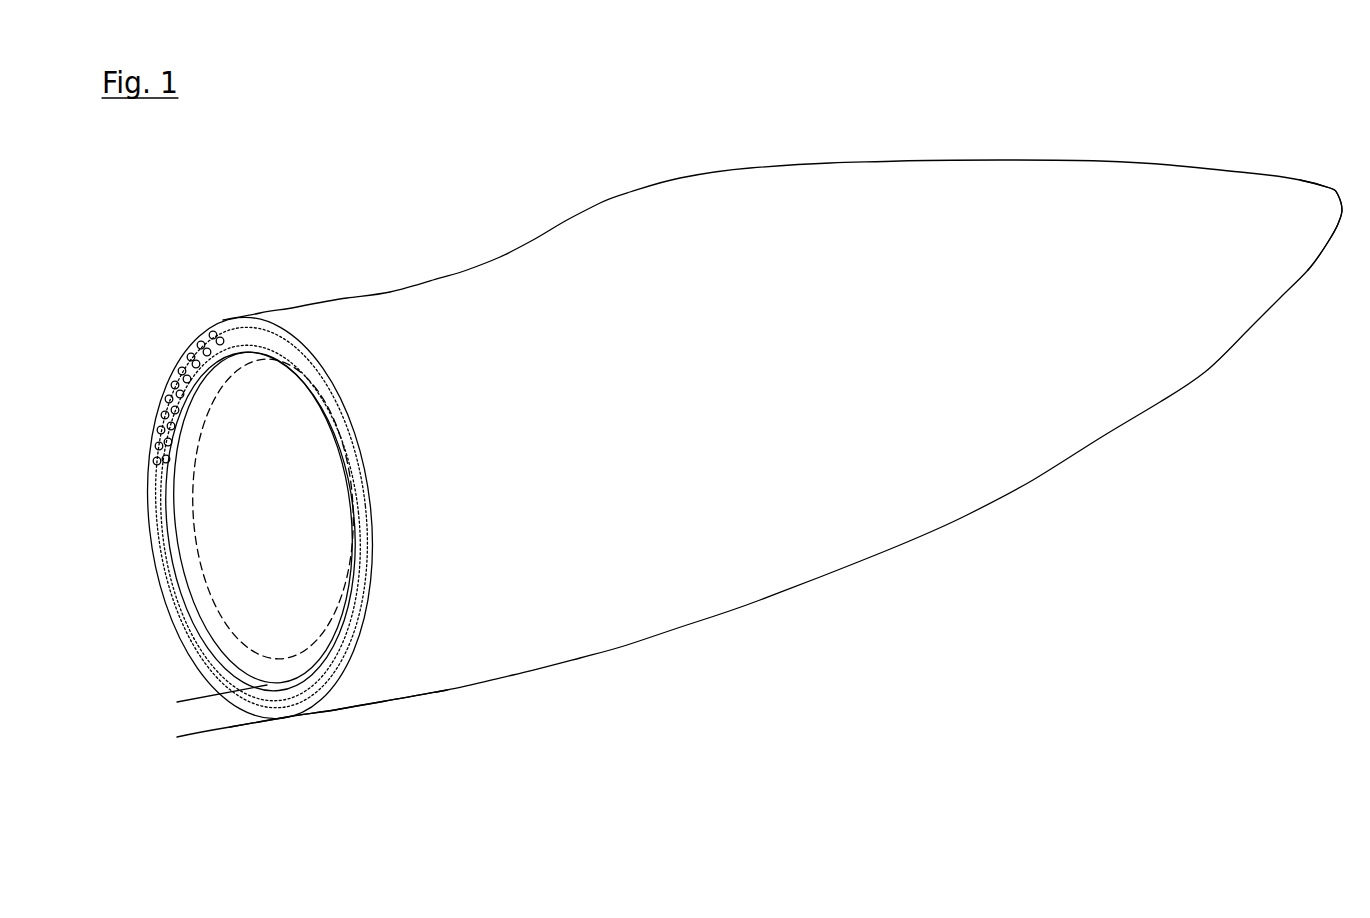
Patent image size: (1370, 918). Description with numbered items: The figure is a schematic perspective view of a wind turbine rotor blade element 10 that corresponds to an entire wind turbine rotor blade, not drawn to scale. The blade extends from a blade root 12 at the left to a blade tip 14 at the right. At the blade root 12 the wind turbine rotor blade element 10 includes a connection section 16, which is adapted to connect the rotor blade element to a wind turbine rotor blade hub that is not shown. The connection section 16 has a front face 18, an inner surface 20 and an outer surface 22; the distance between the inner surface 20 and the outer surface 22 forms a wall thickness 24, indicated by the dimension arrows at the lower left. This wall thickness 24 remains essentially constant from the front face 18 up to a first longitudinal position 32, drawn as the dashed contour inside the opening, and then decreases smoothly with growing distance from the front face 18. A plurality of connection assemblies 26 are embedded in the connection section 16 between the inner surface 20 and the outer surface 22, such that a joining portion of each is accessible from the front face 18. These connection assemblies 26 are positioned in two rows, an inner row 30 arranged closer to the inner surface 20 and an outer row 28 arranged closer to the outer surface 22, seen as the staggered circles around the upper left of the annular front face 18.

The wind turbine rotor blade element 10 is at (386, 181).
The blade root 12 is at (285, 718).
The blade tip 14 is at (1338, 192).
The connection section 16 is at (363, 755).
The front face 18 is at (160, 527).
The inner surface 20 is at (200, 588).
The outer surface 22 is at (336, 698).
The wall thickness 24 is at (183, 702).
The connection assemblies 26 is at (185, 352).
The outer row 28 is at (215, 328).
The inner row 30 is at (231, 343).
The first longitudinal position 32 is at (197, 522).